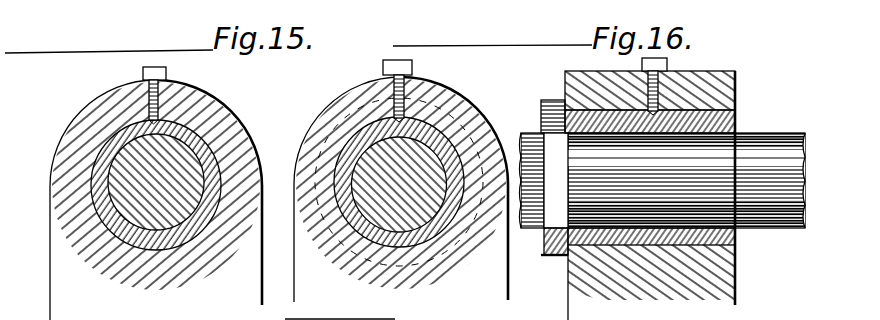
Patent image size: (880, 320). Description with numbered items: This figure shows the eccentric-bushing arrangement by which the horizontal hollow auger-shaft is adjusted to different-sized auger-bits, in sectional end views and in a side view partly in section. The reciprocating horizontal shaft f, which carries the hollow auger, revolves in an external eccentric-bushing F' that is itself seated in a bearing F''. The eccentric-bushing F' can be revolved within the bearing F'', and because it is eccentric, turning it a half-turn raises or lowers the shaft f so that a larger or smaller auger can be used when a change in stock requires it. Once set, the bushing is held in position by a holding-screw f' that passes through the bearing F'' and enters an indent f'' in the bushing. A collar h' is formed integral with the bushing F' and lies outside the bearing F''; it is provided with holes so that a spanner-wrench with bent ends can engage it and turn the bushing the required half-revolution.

In FIG. 15, the bearing F'' is at (279, 193).
In FIG. 16, the bearing F'' is at (666, 195).
In FIG. 16, the eccentric-bushing F' is at (663, 185).
In FIG. 15, the holding-screw f' is at (277, 86).
In FIG. 16, the holding-screw f' is at (663, 80).
In FIG. 15, the indent f'' is at (277, 201).
In FIG. 16, the indent f'' is at (651, 250).
In FIG. 16, the shaft f is at (670, 180).
In FIG. 15, the collar h' is at (404, 182).
In FIG. 16, the collar h' is at (551, 196).